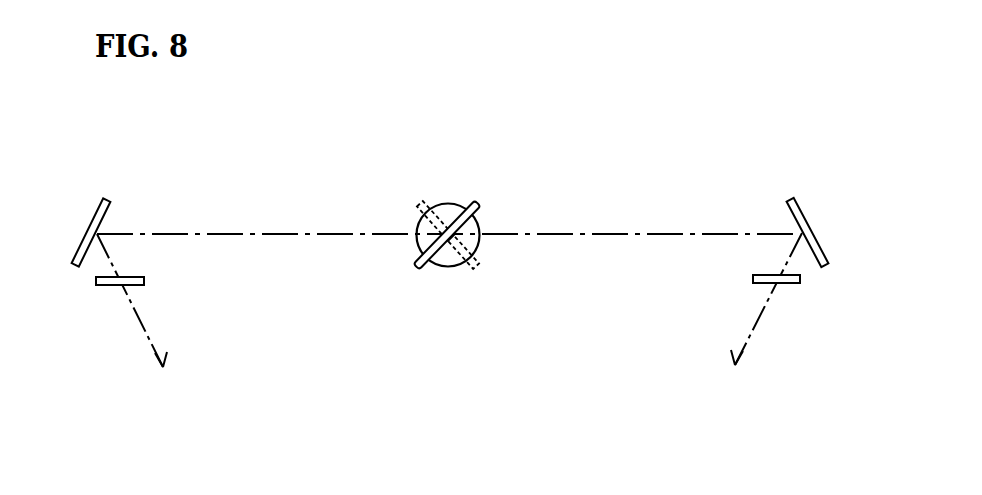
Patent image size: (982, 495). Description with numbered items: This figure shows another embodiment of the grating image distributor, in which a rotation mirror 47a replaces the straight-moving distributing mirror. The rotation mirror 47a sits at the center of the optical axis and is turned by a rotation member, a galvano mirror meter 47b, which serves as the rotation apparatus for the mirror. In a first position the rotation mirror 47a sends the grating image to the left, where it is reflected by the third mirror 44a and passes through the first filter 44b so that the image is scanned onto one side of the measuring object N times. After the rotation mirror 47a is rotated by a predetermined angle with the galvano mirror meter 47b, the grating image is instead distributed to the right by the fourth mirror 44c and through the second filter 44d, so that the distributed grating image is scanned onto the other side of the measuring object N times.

The third mirror 44a is at (80, 246).
The first filter 44b is at (100, 285).
The fourth mirror 44c is at (820, 248).
The second filter 44d is at (792, 284).
The rotation mirror 47a is at (418, 266).
The galvano mirror meter 47b is at (442, 202).